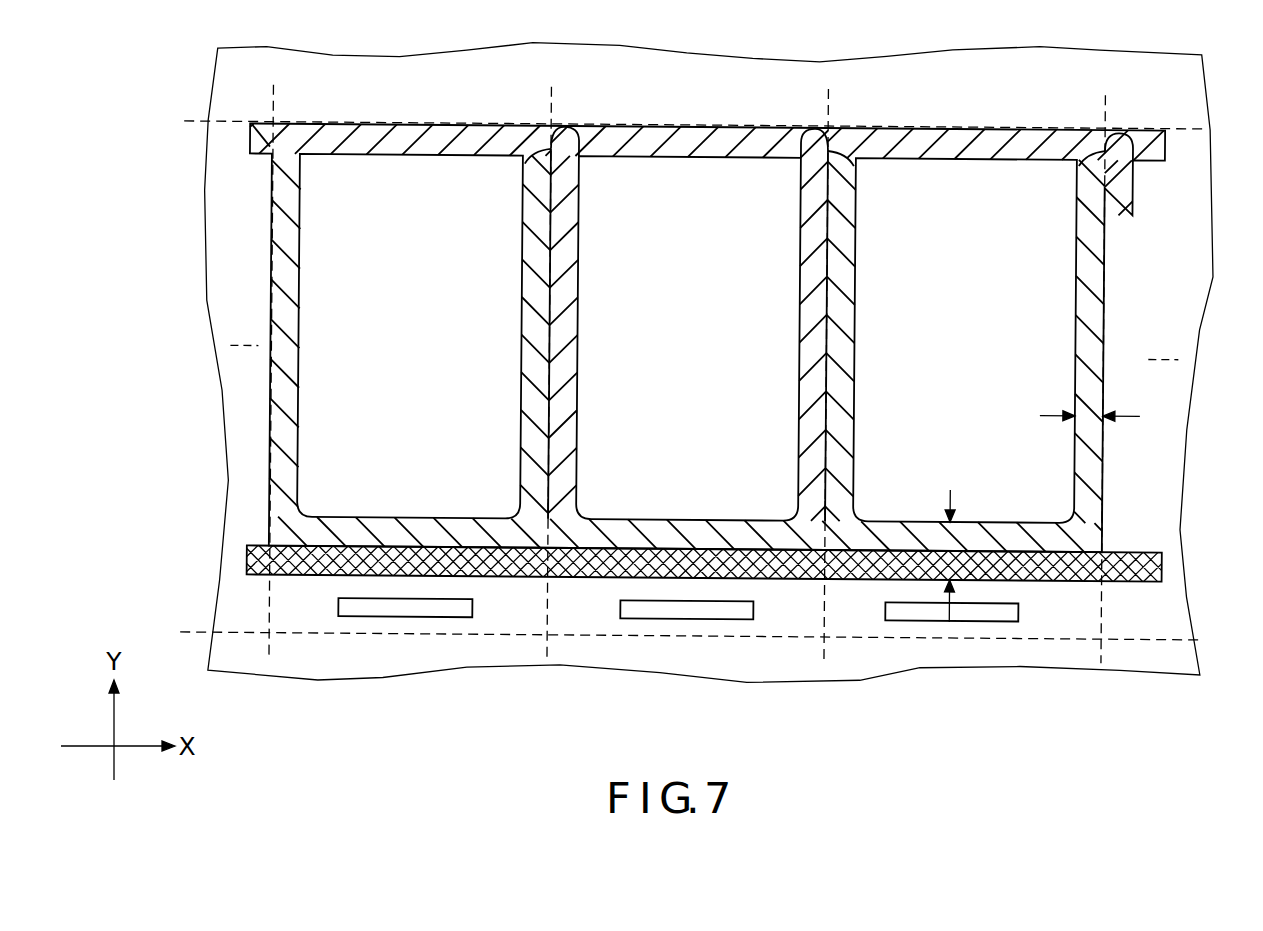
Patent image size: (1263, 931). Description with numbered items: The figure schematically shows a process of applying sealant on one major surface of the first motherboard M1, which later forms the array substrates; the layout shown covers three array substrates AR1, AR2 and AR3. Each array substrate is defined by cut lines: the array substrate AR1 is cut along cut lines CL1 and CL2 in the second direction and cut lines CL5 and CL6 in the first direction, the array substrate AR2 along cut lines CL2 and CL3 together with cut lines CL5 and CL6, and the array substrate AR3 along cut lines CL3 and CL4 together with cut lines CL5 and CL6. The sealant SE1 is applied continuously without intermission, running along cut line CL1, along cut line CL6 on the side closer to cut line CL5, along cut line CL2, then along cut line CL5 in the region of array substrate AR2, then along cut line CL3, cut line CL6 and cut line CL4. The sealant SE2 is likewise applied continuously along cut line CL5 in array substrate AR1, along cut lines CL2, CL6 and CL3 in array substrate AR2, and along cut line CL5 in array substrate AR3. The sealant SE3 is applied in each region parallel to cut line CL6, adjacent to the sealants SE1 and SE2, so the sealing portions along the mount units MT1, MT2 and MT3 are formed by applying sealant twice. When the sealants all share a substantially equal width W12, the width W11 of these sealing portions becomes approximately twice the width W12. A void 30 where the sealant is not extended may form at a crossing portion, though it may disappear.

The array substrate AR1 is at (438, 120).
The array substrate AR2 is at (720, 120).
The array substrate AR3 is at (944, 120).
The first motherboard M1 is at (1077, 70).
The cut line CL1 is at (270, 356).
The cut line CL2 is at (549, 358).
The cut line CL3 is at (825, 359).
The cut line CL4 is at (1102, 364).
The cut line CL5 is at (670, 123).
The cut line CL6 is at (668, 636).
The sealant SE1 is at (285, 230).
The sealant SE2 is at (252, 147).
The sealant SE3 is at (1164, 571).
The width of the sealing portions W11 is at (953, 527).
The width of the sealants W12 is at (1086, 411).
The void 30 is at (532, 579).
The mount unit MT1 is at (418, 610).
The mount unit MT2 is at (691, 611).
The mount unit MT3 is at (941, 611).